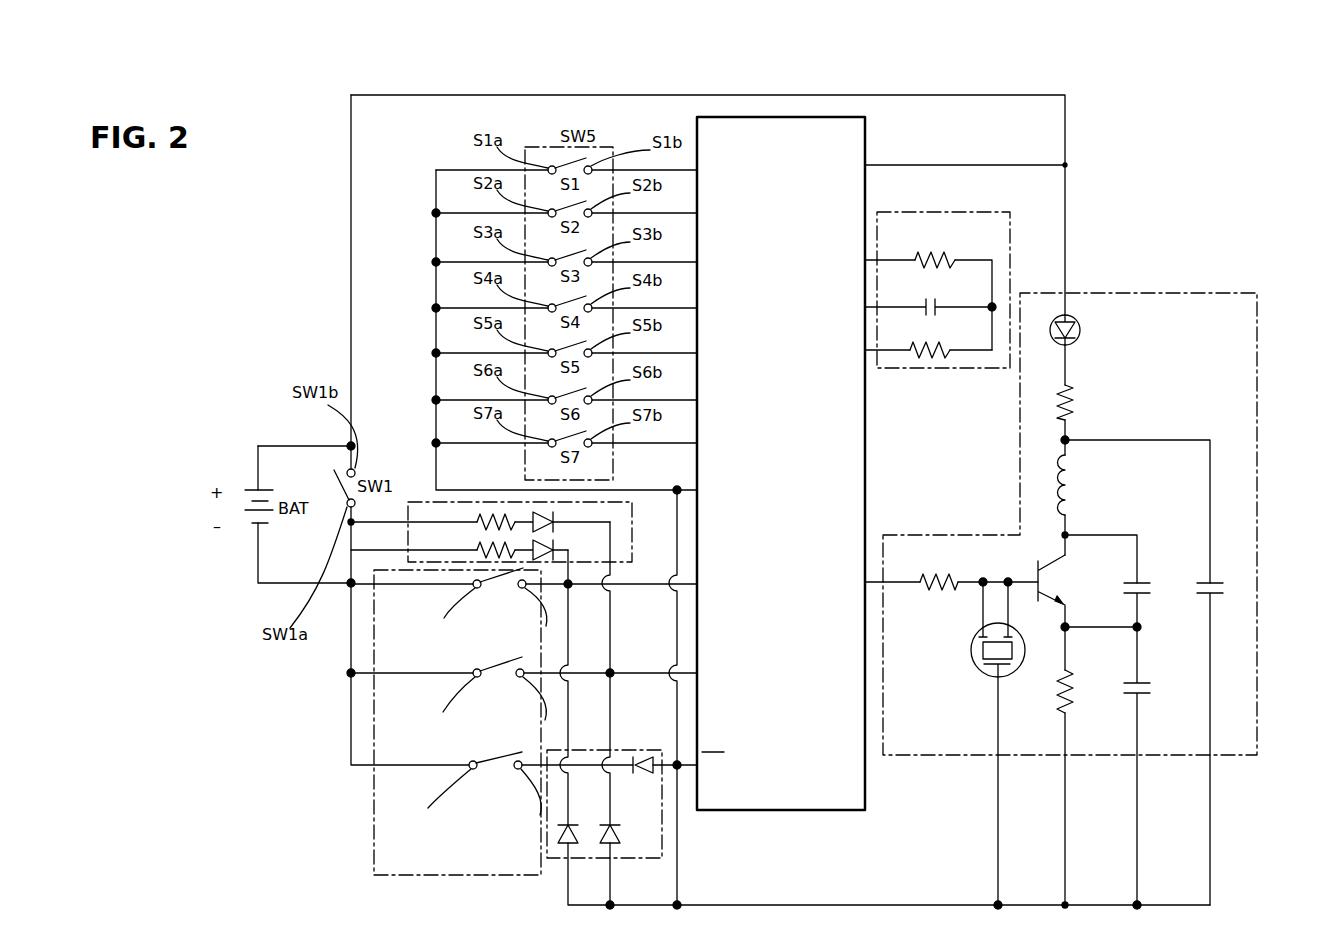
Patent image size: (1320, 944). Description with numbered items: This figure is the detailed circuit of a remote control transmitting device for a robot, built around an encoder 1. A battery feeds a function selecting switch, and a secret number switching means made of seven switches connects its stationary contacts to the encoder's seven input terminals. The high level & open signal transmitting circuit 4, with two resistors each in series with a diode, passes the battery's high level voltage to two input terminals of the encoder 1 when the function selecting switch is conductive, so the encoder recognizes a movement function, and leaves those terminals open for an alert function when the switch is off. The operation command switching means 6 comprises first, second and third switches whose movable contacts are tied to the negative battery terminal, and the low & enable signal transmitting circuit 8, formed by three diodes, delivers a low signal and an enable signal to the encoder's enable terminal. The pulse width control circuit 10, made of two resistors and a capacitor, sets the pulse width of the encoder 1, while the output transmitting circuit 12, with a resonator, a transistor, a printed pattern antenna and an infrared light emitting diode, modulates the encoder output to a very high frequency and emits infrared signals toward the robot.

The encoder 1 is at (803, 117).
The high level & open signal transmitting circuit 4 is at (632, 552).
The operation command switching means 6 is at (373, 835).
The low & enable signal transmitting circuit 8 is at (618, 750).
The pulse width control circuit 10 is at (1010, 247).
The output transmitting circuit 12 is at (1228, 293).